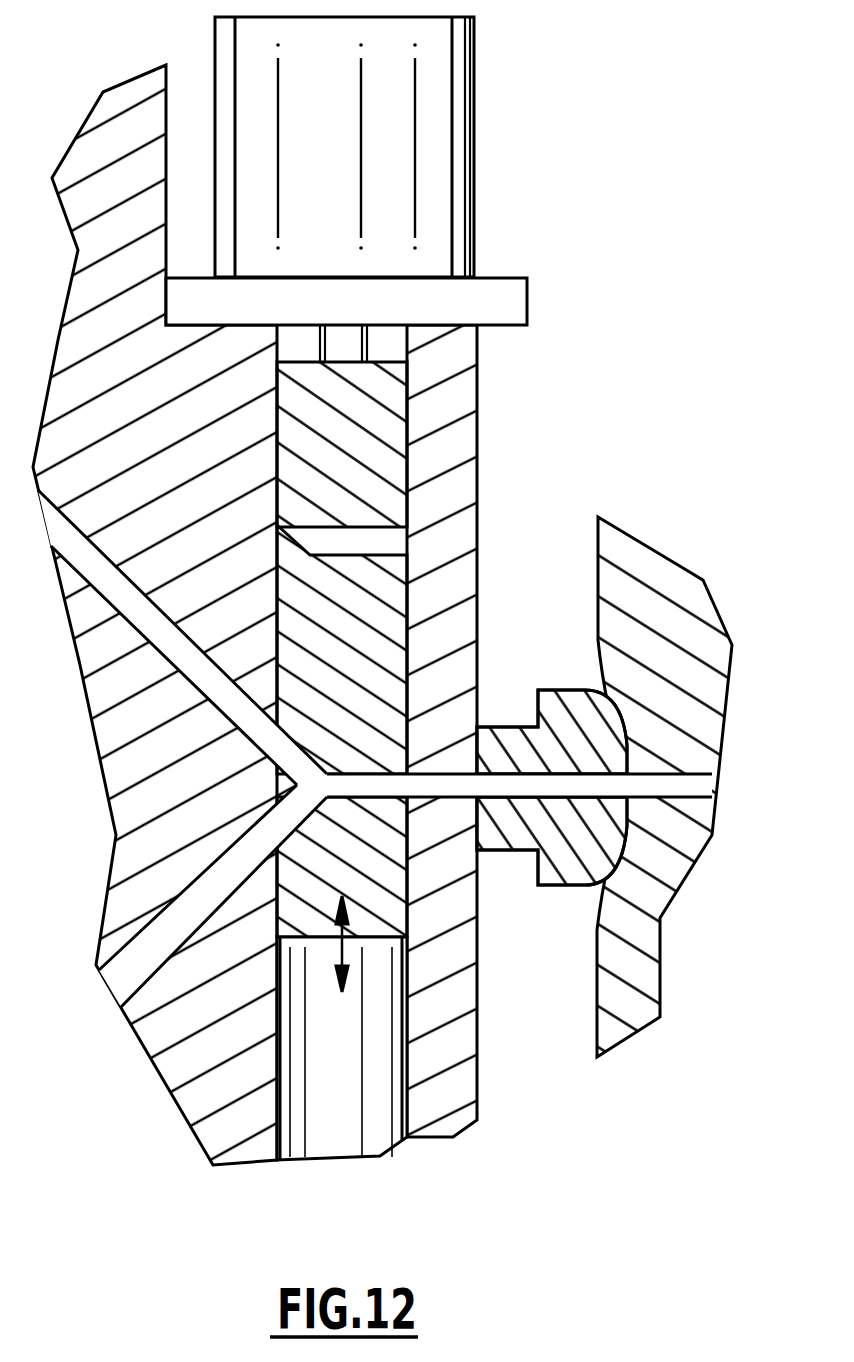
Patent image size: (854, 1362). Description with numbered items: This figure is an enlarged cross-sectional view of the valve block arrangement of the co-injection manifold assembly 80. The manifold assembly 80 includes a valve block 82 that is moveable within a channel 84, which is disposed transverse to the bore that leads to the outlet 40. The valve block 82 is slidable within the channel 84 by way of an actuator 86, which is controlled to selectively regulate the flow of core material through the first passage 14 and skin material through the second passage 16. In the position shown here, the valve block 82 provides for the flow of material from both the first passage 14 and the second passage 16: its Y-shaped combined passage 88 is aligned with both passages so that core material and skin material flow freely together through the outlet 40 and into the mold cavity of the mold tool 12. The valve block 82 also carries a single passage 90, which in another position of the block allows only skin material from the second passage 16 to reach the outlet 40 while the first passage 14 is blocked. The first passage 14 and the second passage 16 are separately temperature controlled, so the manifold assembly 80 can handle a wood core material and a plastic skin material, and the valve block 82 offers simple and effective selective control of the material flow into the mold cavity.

The mold tool 12 is at (630, 567).
The first passage 14 is at (147, 952).
The second passage 16 is at (118, 587).
The outlet 40 is at (582, 785).
The manifold assembly 80 is at (185, 1057).
The valve block 82 is at (378, 427).
The channel 84 is at (343, 1145).
The actuator 86 is at (425, 152).
The combined passage 88 is at (351, 790).
The single passage 90 is at (352, 542).